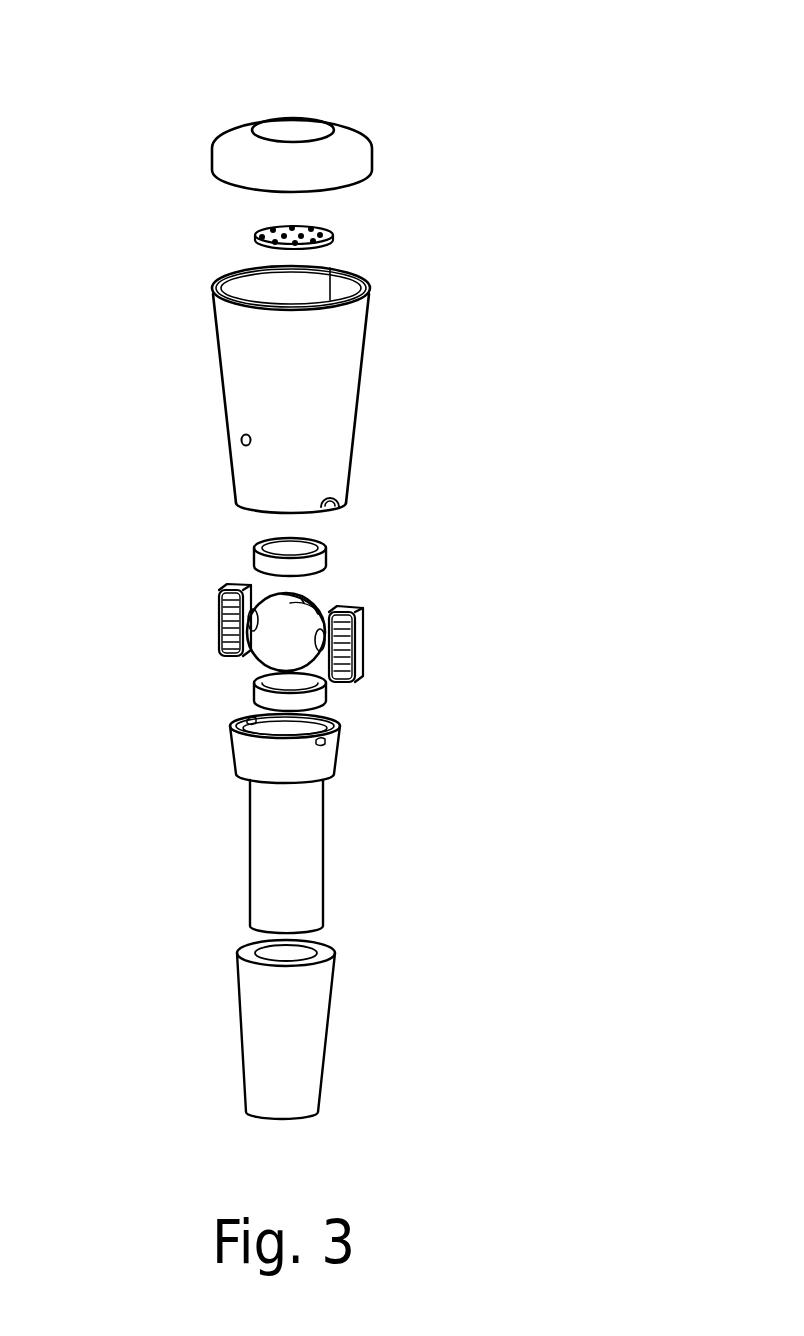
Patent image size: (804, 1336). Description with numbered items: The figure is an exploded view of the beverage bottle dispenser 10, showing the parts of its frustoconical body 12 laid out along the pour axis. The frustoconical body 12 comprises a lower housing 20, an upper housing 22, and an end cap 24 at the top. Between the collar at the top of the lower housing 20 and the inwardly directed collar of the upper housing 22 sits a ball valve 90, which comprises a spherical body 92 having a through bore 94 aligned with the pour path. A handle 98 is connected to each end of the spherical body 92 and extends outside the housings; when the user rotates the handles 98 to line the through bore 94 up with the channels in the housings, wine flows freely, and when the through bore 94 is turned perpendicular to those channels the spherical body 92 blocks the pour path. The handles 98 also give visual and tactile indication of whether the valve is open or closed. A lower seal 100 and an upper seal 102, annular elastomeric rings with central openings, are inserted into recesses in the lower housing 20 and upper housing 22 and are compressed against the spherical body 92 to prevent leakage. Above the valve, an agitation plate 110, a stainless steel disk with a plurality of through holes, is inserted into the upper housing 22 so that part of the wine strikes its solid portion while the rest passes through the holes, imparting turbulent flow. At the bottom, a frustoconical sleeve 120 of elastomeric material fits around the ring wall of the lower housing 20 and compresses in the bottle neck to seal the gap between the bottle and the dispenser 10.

The beverage bottle dispenser 10 is at (478, 93).
The frustoconical body 12 is at (149, 275).
The lower housing 20 is at (305, 833).
The upper housing 22 is at (338, 362).
The end cap 24 is at (233, 142).
The ball valve 90 is at (320, 610).
The spherical body 92 is at (271, 641).
The through bore 94 is at (300, 596).
The handle 98 is at (217, 603).
The lower seal 100 is at (316, 697).
The upper seal 102 is at (335, 530).
The agitation plate 110 is at (325, 230).
The frustoconical sleeve 120 is at (306, 1040).